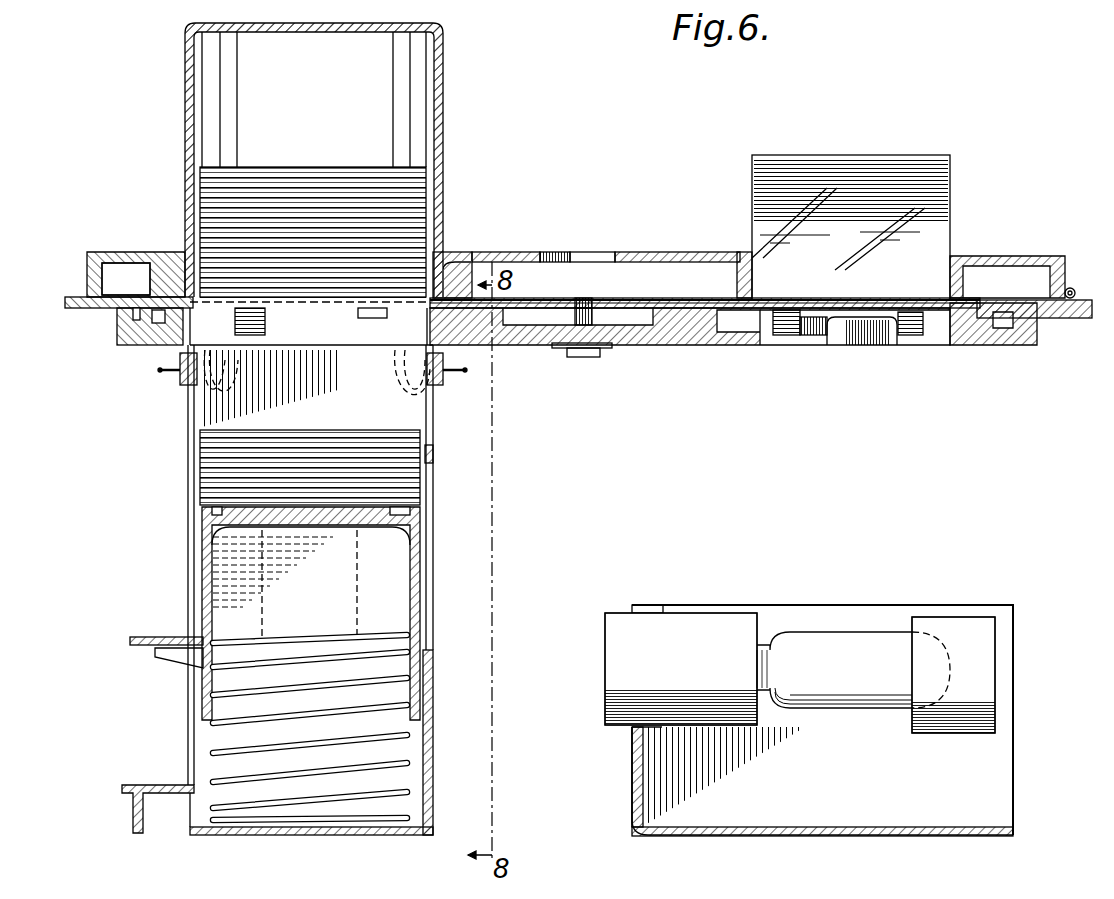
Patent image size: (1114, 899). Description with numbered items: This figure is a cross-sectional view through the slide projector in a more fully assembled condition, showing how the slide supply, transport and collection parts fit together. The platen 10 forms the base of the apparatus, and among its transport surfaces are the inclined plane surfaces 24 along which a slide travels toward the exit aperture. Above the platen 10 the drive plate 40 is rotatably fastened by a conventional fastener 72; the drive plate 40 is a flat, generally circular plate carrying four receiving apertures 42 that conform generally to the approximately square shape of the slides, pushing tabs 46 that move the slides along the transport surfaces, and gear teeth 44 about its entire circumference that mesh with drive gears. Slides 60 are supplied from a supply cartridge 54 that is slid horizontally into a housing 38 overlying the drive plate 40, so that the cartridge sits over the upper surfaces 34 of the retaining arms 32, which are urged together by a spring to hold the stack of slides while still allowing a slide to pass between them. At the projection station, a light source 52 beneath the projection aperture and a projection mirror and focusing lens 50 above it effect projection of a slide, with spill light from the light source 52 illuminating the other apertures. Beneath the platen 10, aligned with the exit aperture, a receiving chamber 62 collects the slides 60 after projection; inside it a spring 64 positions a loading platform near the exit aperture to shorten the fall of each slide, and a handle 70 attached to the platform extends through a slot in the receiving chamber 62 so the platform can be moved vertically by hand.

The platen 10 is at (122, 348).
The inclined plane surfaces 24 is at (855, 338).
The retaining arms 32 is at (183, 312).
The upper surfaces 34 is at (168, 290).
The housing 38 is at (135, 252).
The drive plate 40 is at (87, 283).
The receiving apertures 42 is at (452, 262).
The gear teeth 44 is at (117, 322).
The pushing tabs 46 is at (372, 318).
The projection mirror and focusing lens 50 is at (878, 155).
The light source 52 is at (835, 705).
The supply cartridge 54 is at (443, 92).
The slides 60 is at (428, 178).
The receiving chamber 62 is at (432, 580).
The spring 64 is at (407, 765).
The handle 70 is at (127, 645).
The fastener 72 is at (585, 352).